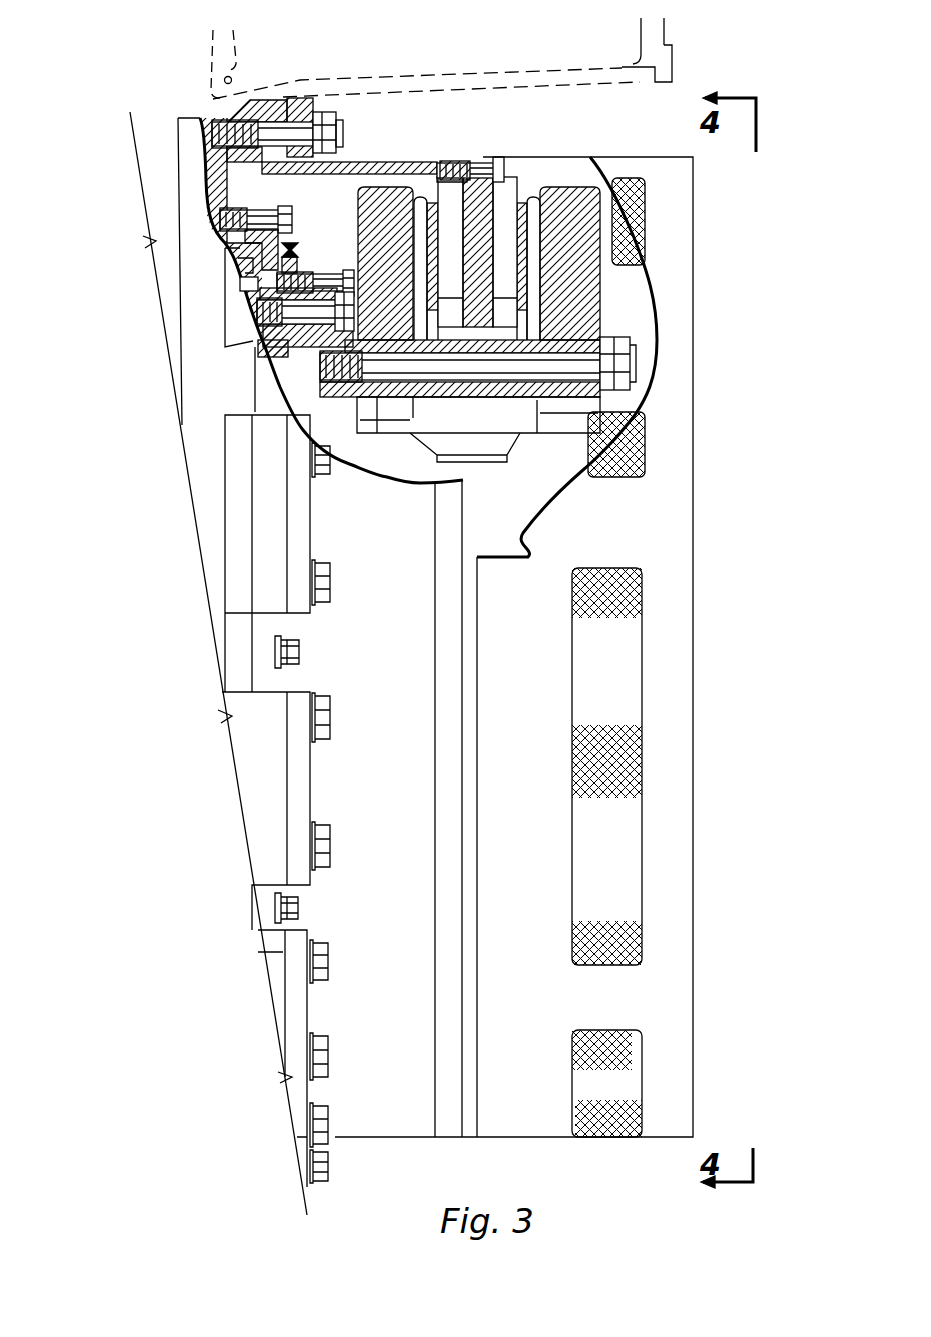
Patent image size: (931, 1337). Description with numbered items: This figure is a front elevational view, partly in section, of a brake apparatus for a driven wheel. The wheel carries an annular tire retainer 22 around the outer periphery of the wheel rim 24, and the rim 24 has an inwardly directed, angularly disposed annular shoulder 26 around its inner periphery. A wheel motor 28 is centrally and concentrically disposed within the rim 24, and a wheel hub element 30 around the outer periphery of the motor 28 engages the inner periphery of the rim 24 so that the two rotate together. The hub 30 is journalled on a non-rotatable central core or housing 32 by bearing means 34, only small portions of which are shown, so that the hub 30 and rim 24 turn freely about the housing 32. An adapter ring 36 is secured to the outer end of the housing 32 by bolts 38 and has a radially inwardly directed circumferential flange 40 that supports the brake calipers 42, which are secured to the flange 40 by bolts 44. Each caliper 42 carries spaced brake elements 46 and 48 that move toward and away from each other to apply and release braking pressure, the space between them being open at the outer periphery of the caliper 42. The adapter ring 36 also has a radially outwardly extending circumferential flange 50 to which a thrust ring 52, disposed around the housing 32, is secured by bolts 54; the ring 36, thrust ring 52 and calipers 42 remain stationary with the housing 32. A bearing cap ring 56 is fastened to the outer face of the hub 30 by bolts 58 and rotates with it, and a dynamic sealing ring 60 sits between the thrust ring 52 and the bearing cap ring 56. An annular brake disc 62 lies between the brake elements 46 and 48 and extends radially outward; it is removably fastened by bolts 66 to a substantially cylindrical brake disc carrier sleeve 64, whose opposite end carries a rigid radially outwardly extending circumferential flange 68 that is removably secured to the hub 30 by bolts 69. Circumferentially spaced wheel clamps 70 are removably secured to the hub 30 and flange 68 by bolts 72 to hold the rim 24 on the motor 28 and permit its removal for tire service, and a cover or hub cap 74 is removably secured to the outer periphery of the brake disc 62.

The annular tire retainer 22 is at (662, 44).
The wheel rim 24 is at (673, 62).
The annular shoulder 26 is at (284, 100).
The wheel motor 28 is at (161, 152).
The wheel hub element 30 is at (207, 128).
The central core or housing 32 is at (252, 306).
The bearing means 34 is at (237, 267).
The adapter ring 36 is at (260, 353).
The bolts 38 is at (302, 333).
The radially inwardly directed circumferential flange 40 is at (458, 390).
The brake caliper 42 is at (598, 302).
The bolts 44 is at (622, 356).
The brake element 46 is at (503, 200).
The brake element 48 is at (446, 215).
The radially outwardly extending circumferential flange 50 is at (310, 273).
The thrust ring 52 is at (243, 289).
The bolts 54 is at (330, 275).
The bearing cap ring 56 is at (283, 192).
The bolts 58 is at (291, 218).
The dynamic sealing ring 60 is at (296, 249).
The annular brake disc 62 is at (502, 225).
The brake disc carrier sleeve 64 is at (377, 164).
The bolts 66 is at (471, 161).
The radially outwardly extending circumferential flange 68 is at (270, 163).
The bolts 69 is at (300, 652).
The wheel clamp 70 is at (258, 100).
The bolts 72 is at (302, 132).
The cover or hub cap 74 is at (694, 277).